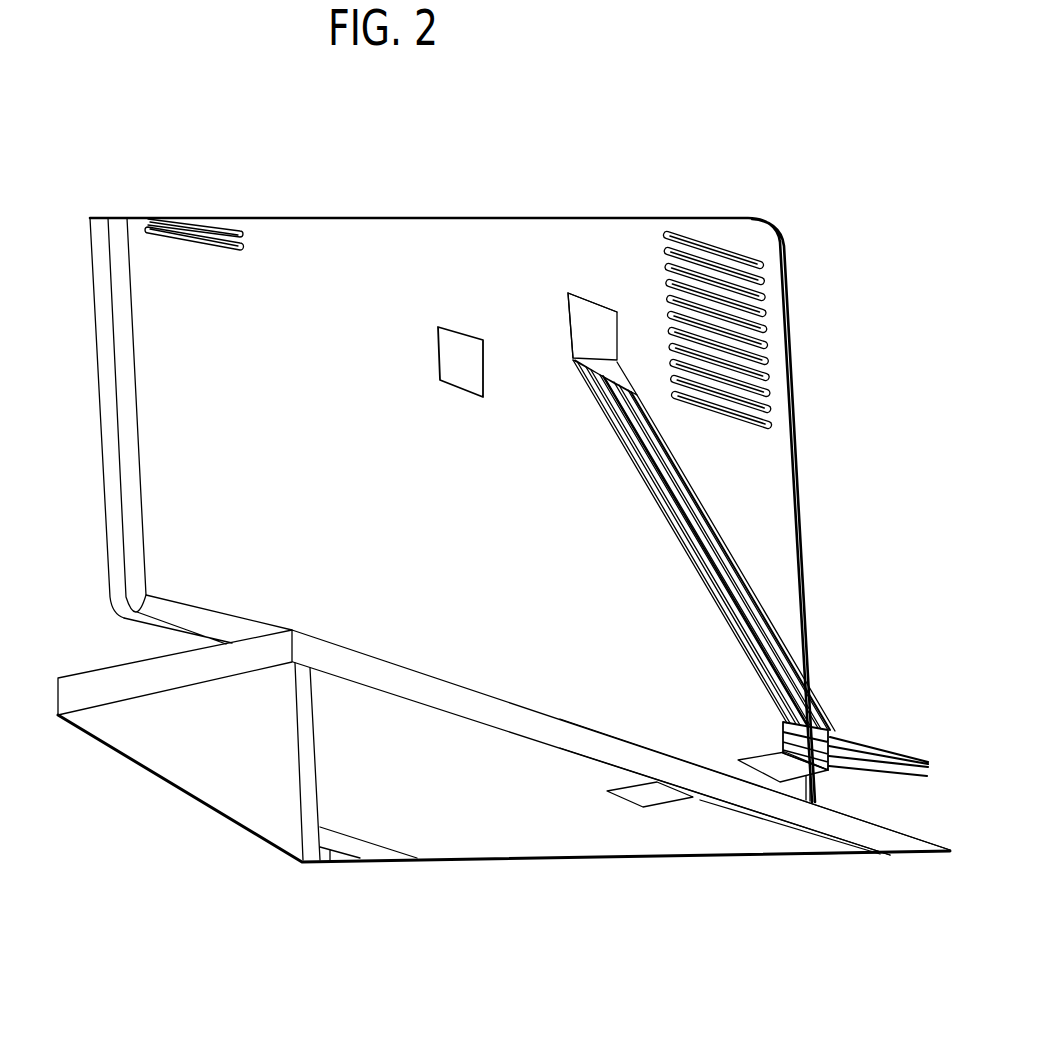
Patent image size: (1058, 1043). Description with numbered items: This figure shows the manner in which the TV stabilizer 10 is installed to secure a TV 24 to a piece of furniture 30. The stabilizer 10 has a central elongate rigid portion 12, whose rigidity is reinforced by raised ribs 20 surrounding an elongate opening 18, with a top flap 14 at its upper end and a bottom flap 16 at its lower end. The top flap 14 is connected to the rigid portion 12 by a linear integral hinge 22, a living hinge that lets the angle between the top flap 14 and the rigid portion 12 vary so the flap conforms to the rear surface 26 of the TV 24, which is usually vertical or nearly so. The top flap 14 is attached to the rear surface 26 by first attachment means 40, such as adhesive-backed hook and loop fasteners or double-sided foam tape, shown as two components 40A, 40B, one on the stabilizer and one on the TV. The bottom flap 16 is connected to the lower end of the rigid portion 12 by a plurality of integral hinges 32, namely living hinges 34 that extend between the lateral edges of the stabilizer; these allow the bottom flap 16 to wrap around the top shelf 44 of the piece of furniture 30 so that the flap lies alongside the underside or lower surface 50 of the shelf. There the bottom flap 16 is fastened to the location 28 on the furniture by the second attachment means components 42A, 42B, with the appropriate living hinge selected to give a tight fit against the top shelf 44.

The TV stabilizer 10 is at (748, 526).
The rigid portion 12 is at (703, 505).
The top flap 14 is at (600, 328).
The bottom flap 16 is at (763, 758).
The elongate opening 18 is at (713, 570).
The raised ribs 20 is at (755, 600).
The integral hinge 22 is at (617, 368).
The TV 24 is at (102, 362).
The rear surface 26 is at (429, 485).
The location 28 is at (618, 778).
The piece of furniture 30 is at (504, 771).
The integral hinges 32 is at (773, 730).
The living hinges 34 is at (895, 761).
The first attachment means 40 is at (515, 319).
The first attachment means component 40A is at (573, 342).
The first attachment means component 40B is at (462, 377).
The second attachment means component 42A is at (738, 760).
The second attachment means component 42B is at (642, 795).
The top shelf 44 is at (815, 818).
The underside or lower surface 50 is at (728, 822).